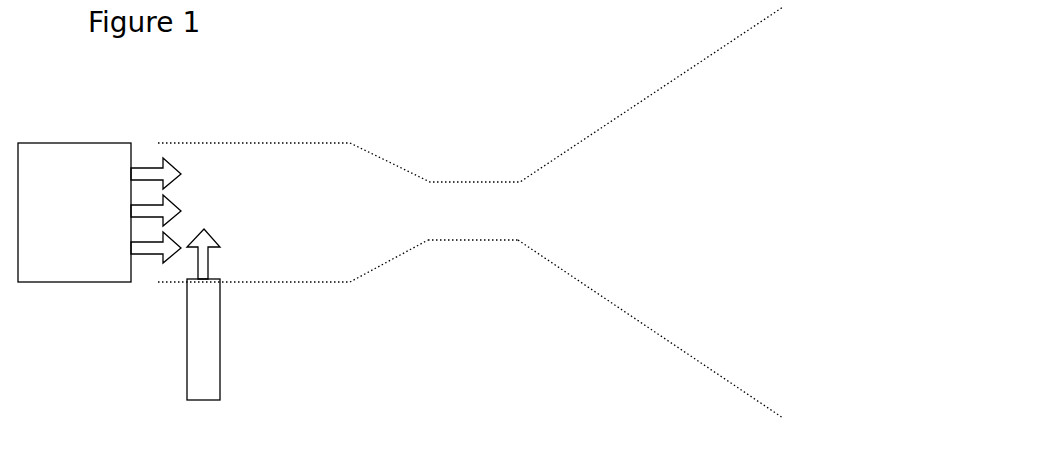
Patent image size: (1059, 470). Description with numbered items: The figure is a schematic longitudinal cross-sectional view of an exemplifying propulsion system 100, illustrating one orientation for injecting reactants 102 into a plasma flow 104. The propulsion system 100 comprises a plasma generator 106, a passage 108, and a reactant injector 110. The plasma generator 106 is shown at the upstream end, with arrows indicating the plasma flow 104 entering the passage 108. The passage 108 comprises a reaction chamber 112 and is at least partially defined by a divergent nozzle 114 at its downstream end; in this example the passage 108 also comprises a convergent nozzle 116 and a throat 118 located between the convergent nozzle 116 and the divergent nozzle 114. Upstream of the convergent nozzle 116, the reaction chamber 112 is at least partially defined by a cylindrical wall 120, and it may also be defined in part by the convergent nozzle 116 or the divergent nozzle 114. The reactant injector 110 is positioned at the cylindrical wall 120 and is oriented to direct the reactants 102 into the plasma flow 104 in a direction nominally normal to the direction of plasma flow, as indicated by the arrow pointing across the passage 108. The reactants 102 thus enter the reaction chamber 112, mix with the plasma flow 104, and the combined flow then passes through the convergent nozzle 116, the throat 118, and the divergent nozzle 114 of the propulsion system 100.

The propulsion system 100 is at (443, 78).
The reactants 102 is at (209, 263).
The plasma flow 104 is at (142, 300).
The plasma generator 106 is at (74, 212).
The passage 108 is at (259, 155).
The reactant injector 110 is at (222, 345).
The reaction chamber 112 is at (259, 214).
The divergent nozzle 114 is at (600, 312).
The convergent nozzle 116 is at (394, 276).
The throat 118 is at (478, 257).
The cylindrical wall 120 is at (322, 282).